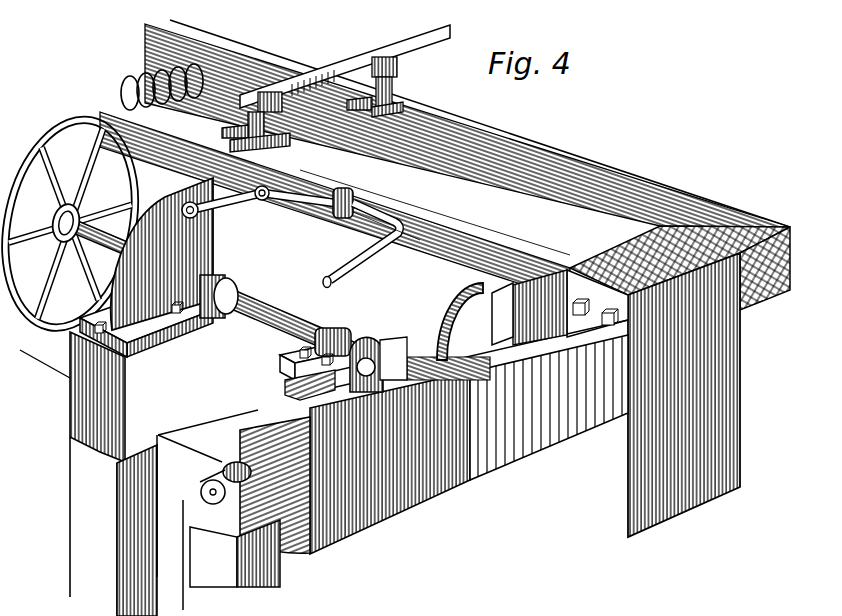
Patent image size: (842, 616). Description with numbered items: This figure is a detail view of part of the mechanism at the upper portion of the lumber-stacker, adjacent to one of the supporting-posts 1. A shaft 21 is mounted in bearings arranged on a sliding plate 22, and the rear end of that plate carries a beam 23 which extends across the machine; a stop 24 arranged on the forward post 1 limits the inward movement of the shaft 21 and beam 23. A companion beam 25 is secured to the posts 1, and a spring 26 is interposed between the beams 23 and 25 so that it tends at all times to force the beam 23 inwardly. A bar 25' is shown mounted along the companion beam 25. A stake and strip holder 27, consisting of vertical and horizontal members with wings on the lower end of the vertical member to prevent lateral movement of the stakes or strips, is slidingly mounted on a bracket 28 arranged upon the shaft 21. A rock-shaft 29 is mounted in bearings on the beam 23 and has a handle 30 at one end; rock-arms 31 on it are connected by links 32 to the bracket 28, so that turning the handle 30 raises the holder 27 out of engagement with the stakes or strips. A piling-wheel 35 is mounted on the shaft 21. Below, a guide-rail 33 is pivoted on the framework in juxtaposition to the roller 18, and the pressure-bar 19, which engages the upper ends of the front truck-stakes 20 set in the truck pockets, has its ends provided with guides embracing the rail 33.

The supporting-post 1 is at (680, 381).
The pulley 18 is at (202, 494).
The pressure-bar 19 is at (233, 508).
The front truck-stake 20 is at (113, 526).
The shaft 21 is at (255, 325).
The sliding plate 22 is at (422, 352).
The beam 23 is at (386, 250).
The stop 24 is at (505, 322).
The companion beam 25 is at (445, 160).
The bar 25' is at (345, 59).
The spring 26 is at (145, 80).
The stake and strip holder 27 is at (116, 374).
The bracket 28 is at (162, 254).
The rock-shaft 29 is at (308, 196).
The handle 30 is at (361, 257).
The rock-arm 31 is at (270, 199).
The link 32 is at (228, 211).
The guide-rail 33 is at (253, 425).
The piling-wheel 35 is at (78, 223).